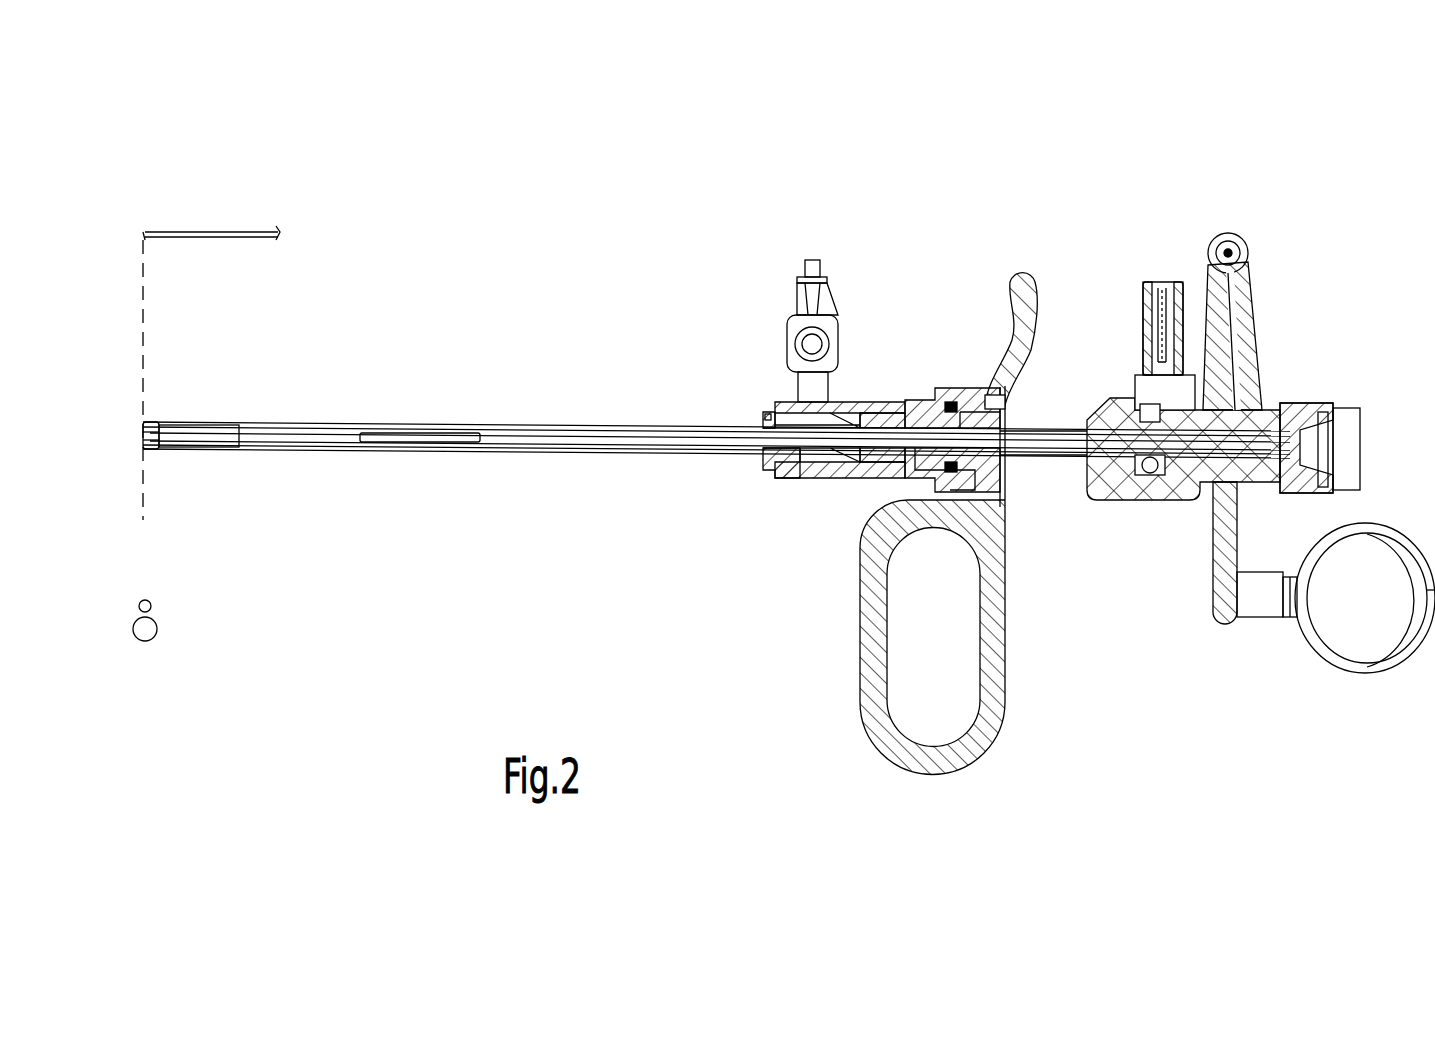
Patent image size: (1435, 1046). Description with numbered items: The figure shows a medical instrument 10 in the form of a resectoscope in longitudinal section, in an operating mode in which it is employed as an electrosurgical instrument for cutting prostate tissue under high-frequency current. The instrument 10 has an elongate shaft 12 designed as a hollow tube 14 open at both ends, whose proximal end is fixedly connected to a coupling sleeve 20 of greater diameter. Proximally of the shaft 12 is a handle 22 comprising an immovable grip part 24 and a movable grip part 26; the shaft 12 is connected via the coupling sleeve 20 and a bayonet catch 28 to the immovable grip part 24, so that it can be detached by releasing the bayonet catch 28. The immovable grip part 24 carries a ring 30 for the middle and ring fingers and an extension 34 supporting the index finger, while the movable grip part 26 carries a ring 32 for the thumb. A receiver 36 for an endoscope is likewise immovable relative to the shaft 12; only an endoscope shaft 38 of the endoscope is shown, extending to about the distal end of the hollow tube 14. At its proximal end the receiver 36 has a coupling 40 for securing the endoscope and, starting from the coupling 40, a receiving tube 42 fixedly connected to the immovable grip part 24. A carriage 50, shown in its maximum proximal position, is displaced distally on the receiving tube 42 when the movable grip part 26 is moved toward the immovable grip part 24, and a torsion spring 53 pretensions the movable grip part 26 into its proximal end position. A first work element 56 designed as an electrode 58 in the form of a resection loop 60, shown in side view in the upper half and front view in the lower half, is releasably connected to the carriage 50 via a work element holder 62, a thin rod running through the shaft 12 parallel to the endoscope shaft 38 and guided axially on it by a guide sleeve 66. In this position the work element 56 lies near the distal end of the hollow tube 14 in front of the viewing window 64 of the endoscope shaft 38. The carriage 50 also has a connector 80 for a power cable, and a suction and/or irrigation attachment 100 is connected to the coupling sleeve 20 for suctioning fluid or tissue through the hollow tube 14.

The medical instrument 10 is at (876, 208).
The shaft 12 is at (386, 328).
The hollow tube 14 is at (622, 420).
The coupling sleeve 20 is at (860, 402).
The handle 22 is at (1130, 708).
The immovable grip part 24 is at (1025, 550).
The movable grip part 26 is at (1192, 526).
The bayonet catch 28 is at (968, 393).
The ring 30 is at (872, 680).
The ring 32 is at (1325, 656).
The extension 34 is at (1040, 312).
The receiver 36 is at (1280, 328).
The endoscope shaft 38 is at (616, 446).
The coupling 40 is at (1268, 406).
The receiving tube 42 is at (1045, 455).
The carriage 50 is at (1112, 500).
The torsion spring 53 is at (1250, 244).
The first work element 56 is at (137, 388).
The electrode 58 is at (143, 434).
The resection loop 60 is at (143, 232).
The work element holder 62 is at (490, 427).
The viewing window 64 is at (153, 446).
The guide sleeve 66 is at (410, 444).
The connector 80 is at (1145, 316).
The suction and/or irrigation attachment 100 is at (797, 296).